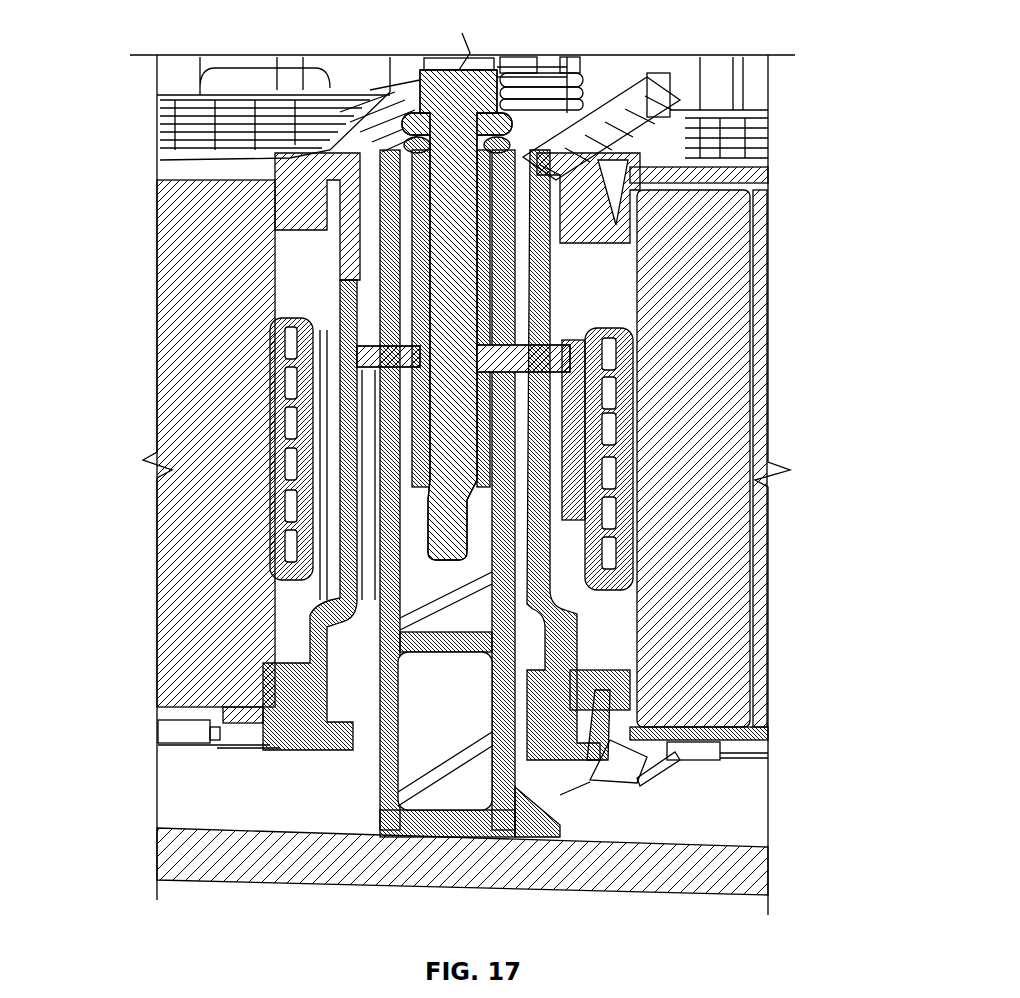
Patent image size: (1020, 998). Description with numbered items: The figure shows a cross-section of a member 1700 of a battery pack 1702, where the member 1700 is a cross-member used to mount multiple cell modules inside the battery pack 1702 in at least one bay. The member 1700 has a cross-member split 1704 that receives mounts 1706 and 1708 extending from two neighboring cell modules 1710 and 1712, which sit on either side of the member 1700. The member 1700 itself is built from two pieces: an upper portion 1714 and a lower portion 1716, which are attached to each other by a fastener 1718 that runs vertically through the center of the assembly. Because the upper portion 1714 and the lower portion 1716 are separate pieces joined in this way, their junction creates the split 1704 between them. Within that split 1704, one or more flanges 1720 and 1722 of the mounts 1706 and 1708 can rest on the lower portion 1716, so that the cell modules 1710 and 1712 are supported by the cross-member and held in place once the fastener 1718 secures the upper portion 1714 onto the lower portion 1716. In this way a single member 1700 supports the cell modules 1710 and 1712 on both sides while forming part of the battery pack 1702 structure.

The member 1700 is at (370, 861).
The battery pack 1702 is at (747, 823).
The cross-member split 1704 is at (500, 272).
The mount 1706 is at (527, 360).
The mount 1708 is at (300, 634).
The cell module 1710 is at (705, 772).
The cell module 1712 is at (189, 762).
The upper portion 1714 is at (620, 80).
The lower portion 1716 is at (453, 825).
The fastener 1718 is at (432, 76).
The flange 1720 is at (497, 362).
The flange 1722 is at (416, 360).